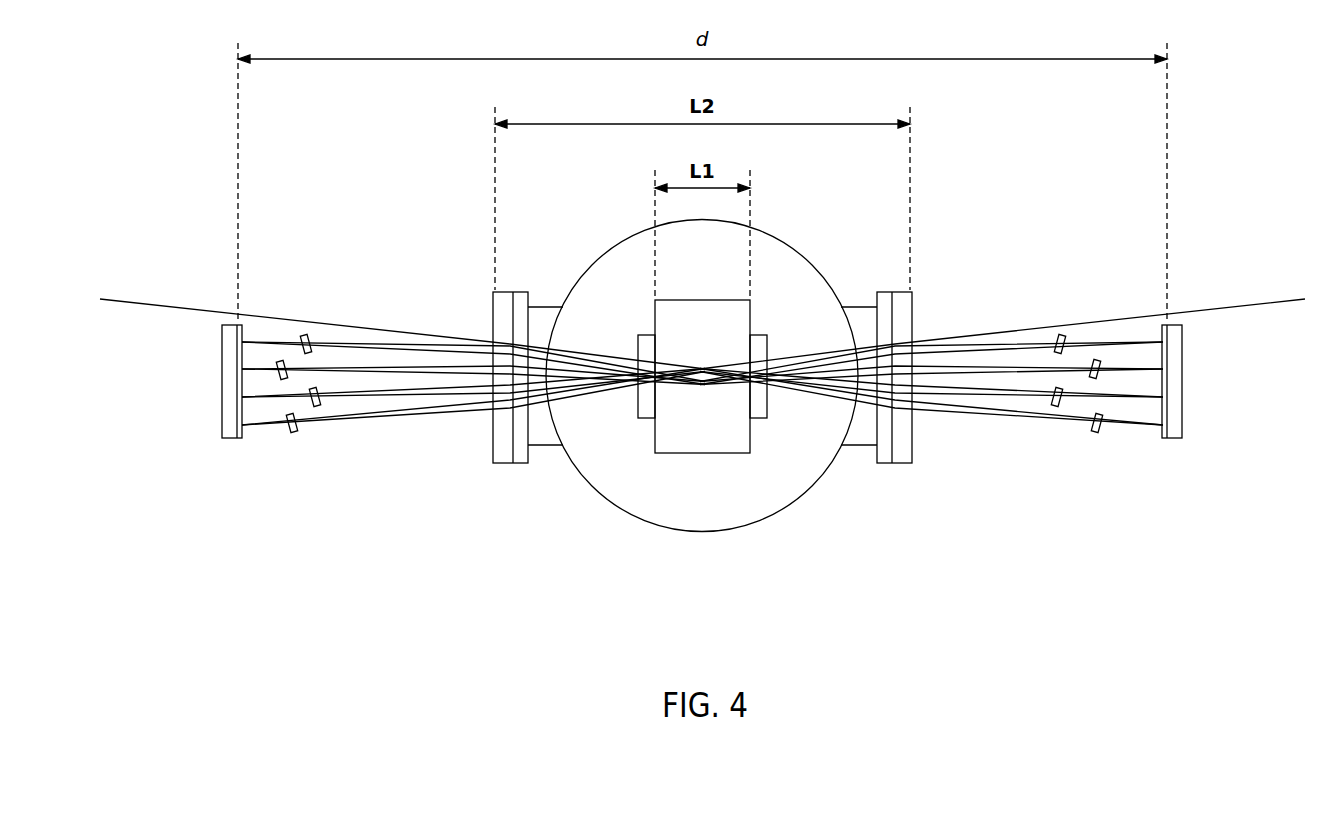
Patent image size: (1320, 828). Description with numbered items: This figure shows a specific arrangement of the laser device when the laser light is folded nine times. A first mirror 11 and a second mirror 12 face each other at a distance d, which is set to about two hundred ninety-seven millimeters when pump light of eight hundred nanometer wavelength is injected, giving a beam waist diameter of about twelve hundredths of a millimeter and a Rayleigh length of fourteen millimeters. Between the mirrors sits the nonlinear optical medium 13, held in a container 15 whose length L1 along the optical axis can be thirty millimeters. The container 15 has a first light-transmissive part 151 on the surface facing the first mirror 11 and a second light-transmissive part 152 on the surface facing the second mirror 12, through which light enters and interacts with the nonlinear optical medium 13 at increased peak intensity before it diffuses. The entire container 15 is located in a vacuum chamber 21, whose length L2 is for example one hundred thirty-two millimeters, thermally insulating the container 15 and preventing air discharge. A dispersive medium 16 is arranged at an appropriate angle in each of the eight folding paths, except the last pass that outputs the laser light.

The first mirror 11 is at (233, 432).
The second mirror 12 is at (1172, 432).
The nonlinear optical medium 13 is at (707, 398).
The container 15 is at (703, 454).
The first light-transmissive part 151 is at (648, 418).
The second light-transmissive part 152 is at (758, 418).
The dispersive medium 16 is at (308, 335).
The vacuum chamber 21 is at (812, 485).